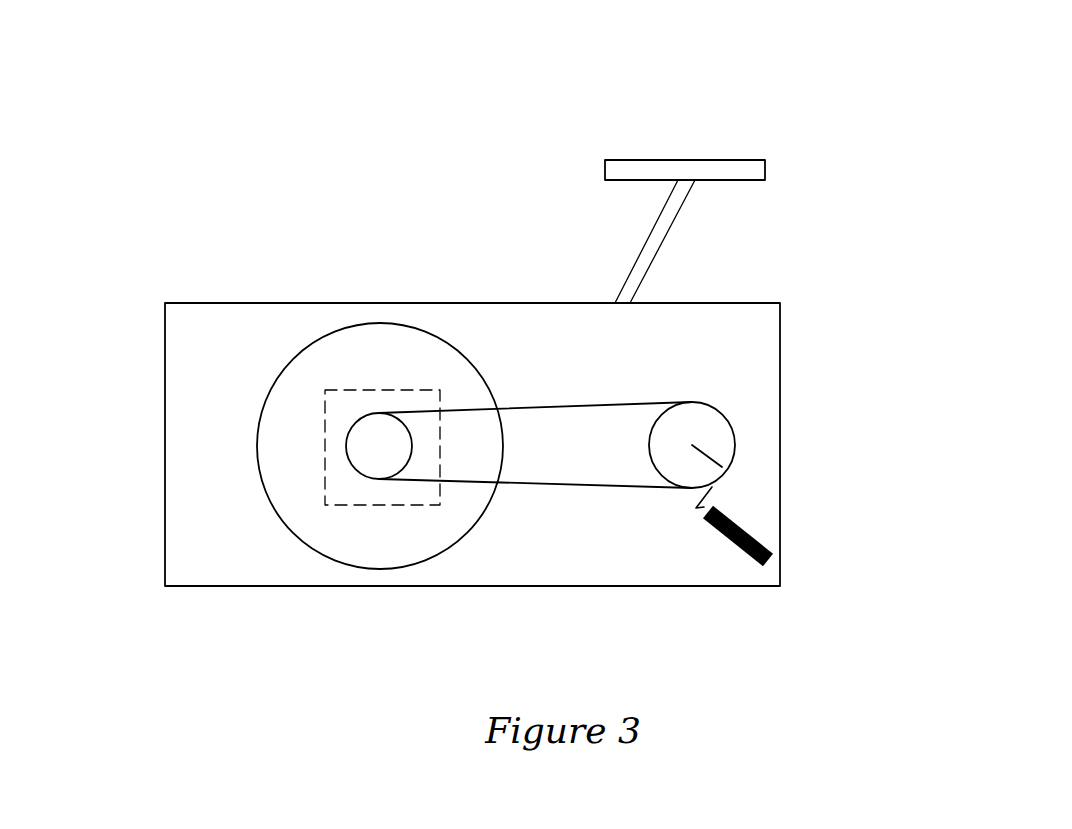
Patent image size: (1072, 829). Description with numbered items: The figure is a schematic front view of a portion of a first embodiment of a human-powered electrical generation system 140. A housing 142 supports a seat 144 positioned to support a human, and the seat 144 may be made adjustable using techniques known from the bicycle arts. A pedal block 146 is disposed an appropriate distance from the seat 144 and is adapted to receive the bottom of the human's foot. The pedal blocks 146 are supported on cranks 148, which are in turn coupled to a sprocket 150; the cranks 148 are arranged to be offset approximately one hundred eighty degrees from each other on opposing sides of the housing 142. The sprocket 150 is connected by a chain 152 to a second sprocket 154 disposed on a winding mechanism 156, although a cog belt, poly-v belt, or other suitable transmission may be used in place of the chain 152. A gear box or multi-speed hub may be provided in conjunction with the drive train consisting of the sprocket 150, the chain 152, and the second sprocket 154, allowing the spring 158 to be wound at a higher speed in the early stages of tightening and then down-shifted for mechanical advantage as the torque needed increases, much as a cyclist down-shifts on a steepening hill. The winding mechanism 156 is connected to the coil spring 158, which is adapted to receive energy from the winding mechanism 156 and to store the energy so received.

The human-powered electrical generation system 140 is at (1002, 134).
The housing 142 is at (783, 388).
The seat 144 is at (720, 157).
The pedal block 146 is at (755, 533).
The crank 148 is at (703, 458).
The sprocket 150 is at (693, 418).
The chain 152 is at (495, 407).
The second sprocket 154 is at (397, 450).
The winding mechanism 156 is at (350, 493).
The coil spring 158 is at (287, 423).